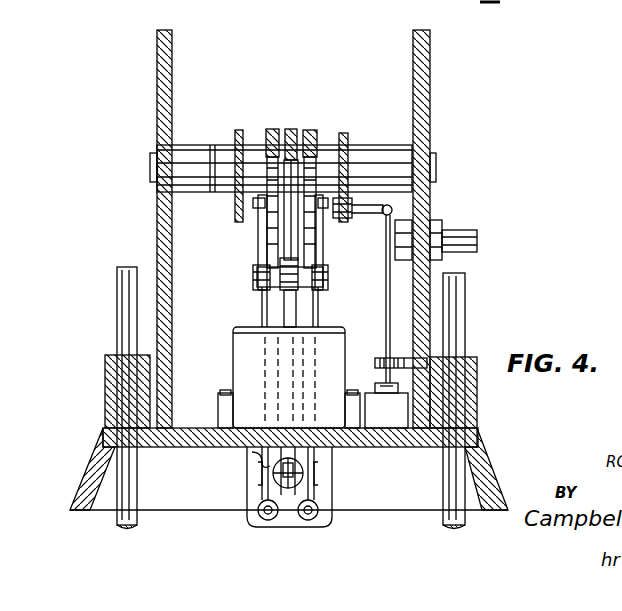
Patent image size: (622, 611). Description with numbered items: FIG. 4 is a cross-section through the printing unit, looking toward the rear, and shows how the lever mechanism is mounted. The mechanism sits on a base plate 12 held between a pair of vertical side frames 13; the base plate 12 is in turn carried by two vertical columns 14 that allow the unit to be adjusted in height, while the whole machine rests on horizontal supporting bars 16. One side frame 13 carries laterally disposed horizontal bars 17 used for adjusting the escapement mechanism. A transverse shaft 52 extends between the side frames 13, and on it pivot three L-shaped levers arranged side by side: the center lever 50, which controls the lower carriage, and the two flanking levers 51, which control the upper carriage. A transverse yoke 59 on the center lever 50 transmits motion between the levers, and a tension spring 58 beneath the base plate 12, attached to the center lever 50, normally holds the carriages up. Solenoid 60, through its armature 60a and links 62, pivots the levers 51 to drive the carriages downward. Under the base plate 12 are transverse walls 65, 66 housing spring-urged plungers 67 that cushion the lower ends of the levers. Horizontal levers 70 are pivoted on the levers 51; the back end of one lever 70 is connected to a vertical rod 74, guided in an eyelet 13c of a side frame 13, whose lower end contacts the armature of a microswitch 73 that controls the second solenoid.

The base plate 12 is at (202, 448).
The side frames 13 is at (172, 72).
The eyelet 13c is at (380, 364).
The vertical columns 14 is at (117, 282).
The supporting bars 16 is at (516, 12).
The horizontal bars 17 is at (462, 232).
The center lever 50 is at (292, 129).
The levers 51 is at (272, 129).
The transverse shaft 52 is at (150, 170).
The tension spring 58 is at (290, 497).
The yoke 59 is at (325, 478).
The solenoid 60 is at (345, 340).
The armature 60a is at (285, 293).
The links 62 is at (260, 252).
The rear wall 65 is at (333, 515).
The forward wall 66 is at (256, 455).
The spring-urged plungers 67 is at (255, 513).
The horizontal levers 70 is at (239, 130).
The microswitch 73 is at (398, 421).
The vertical rod 74 is at (386, 274).